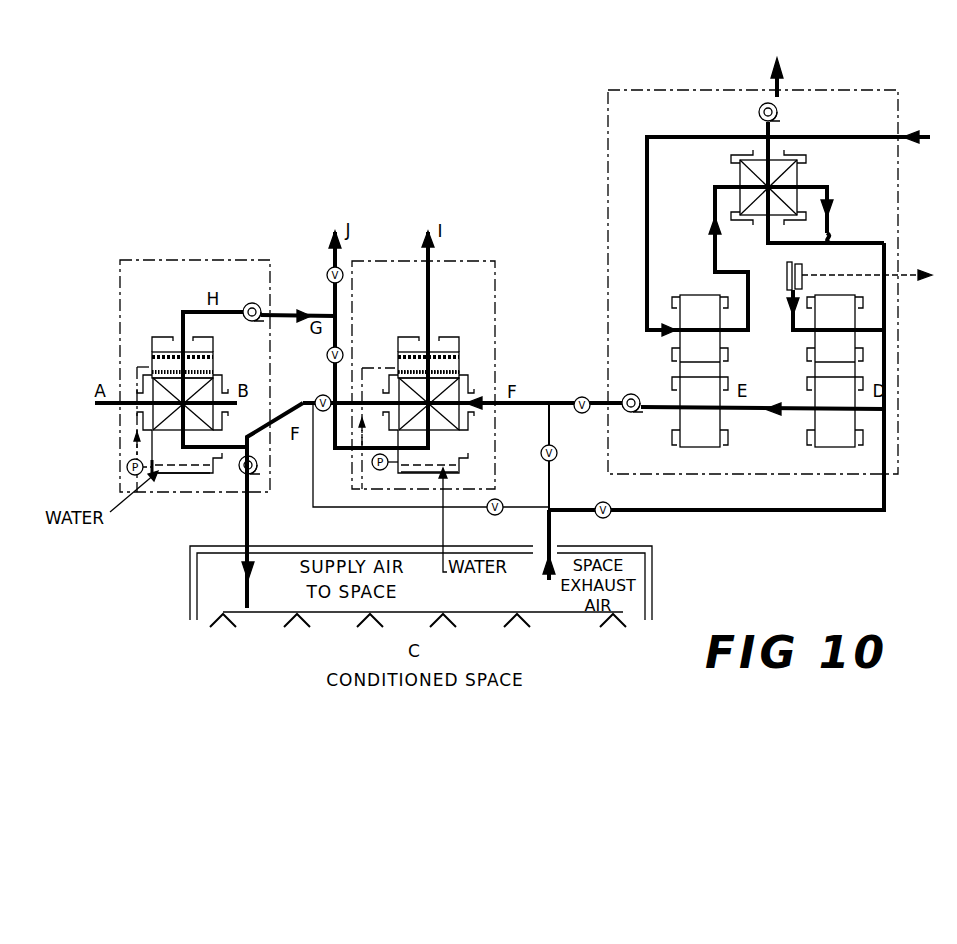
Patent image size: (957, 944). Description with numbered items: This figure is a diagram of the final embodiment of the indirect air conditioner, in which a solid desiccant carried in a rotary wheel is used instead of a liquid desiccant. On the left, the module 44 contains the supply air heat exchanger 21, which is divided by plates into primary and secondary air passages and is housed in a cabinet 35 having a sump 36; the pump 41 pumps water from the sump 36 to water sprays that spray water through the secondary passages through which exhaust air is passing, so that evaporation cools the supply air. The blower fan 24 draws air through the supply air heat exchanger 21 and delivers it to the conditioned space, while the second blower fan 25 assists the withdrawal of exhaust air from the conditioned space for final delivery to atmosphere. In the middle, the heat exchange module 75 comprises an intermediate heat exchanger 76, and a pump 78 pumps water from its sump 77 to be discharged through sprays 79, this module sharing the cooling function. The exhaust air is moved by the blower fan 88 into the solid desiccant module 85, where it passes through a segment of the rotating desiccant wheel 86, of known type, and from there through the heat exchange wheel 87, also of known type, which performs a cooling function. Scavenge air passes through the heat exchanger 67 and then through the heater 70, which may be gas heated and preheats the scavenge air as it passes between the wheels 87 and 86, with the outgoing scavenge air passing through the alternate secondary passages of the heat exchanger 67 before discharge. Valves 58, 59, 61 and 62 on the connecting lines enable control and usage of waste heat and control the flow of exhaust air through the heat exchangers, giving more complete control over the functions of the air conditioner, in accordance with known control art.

The module 44 is at (172, 256).
The second blower fan 25 is at (248, 304).
The concentrator heat exchanger 61 is at (332, 326).
The valve 62 is at (340, 343).
The heat exchange module 75 is at (455, 256).
The intermediate heat exchanger 76 is at (456, 340).
The solid desiccant module 85 is at (850, 84).
The heat exchanger 67 is at (812, 168).
The heater 70 is at (803, 284).
The blower fan 88 is at (623, 394).
The sprays 79 is at (450, 370).
The supply air heat exchanger 21 is at (168, 411).
The pump 41 is at (126, 466).
The cabinet 35 is at (165, 480).
The sump 36 is at (189, 475).
The blower fan 24 is at (258, 474).
The pump 78 is at (378, 472).
The sump 77 is at (421, 466).
The valve 58 is at (502, 512).
The valve 59 is at (610, 515).
The heat exchange wheel 87 is at (703, 430).
The desiccant wheel 86 is at (838, 430).